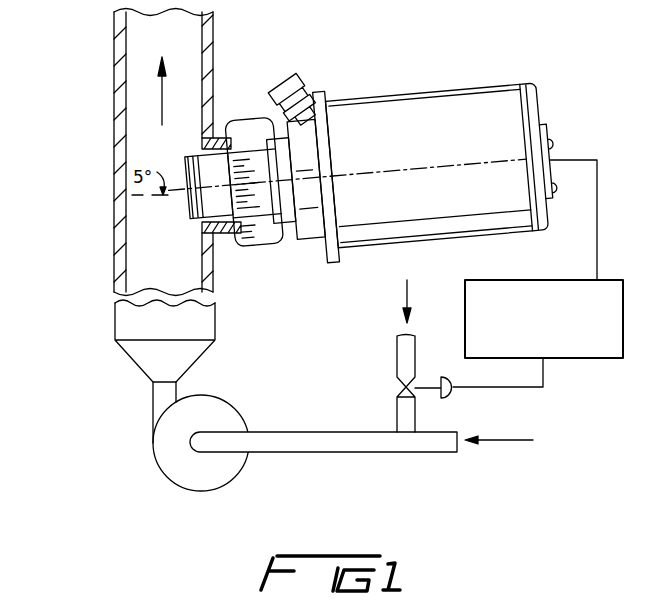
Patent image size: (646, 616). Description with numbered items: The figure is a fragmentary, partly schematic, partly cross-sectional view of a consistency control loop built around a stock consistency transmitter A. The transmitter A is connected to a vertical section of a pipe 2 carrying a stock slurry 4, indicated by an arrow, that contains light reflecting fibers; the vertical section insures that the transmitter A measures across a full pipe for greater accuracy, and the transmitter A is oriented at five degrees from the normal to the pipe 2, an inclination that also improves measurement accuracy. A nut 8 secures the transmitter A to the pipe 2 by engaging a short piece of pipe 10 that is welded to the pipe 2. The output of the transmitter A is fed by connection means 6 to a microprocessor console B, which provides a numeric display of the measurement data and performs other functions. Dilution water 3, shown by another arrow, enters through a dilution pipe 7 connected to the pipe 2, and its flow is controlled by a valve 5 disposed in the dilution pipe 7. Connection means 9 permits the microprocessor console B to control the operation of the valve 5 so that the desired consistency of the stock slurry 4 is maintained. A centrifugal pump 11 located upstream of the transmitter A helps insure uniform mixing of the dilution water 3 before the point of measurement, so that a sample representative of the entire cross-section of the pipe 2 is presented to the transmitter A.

The pipe 2 is at (114, 57).
The dilution water 3 is at (406, 296).
The stock slurry 4 is at (160, 105).
The valve 5 is at (446, 377).
The connection means 6 is at (591, 158).
The dilution pipe 7 is at (403, 355).
The nut 8 is at (268, 232).
The connection means 9 is at (500, 387).
The short piece of pipe 10 is at (232, 234).
The centrifugal pump 11 is at (162, 405).
The stock consistency transmitter A is at (415, 80).
The microprocessor console B is at (525, 272).